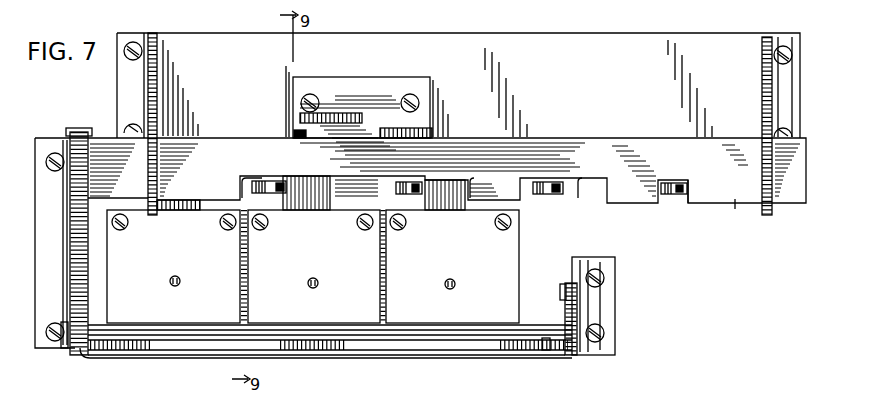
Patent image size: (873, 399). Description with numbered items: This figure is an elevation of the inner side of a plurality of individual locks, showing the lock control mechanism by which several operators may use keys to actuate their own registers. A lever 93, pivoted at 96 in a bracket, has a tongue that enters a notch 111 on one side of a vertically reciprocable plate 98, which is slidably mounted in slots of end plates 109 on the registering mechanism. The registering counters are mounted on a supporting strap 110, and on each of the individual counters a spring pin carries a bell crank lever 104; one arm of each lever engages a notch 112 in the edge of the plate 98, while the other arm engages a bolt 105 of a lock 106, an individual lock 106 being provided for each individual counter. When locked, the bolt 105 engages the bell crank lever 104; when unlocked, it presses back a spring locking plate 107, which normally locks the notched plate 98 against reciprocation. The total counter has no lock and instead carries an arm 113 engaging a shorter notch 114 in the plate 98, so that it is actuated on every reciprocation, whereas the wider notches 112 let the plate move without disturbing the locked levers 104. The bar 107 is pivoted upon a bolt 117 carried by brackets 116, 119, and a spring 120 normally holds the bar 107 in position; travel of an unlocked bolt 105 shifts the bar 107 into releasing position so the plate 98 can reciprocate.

The lever 93 is at (292, 138).
The pivot 96 is at (361, 129).
The vertically reciprocable plate 98 is at (420, 184).
The bell crank lever 104 is at (270, 194).
The bolt 105 is at (180, 210).
The lock 106 is at (513, 269).
The spring locking plate 107 is at (88, 130).
The end plates 109 is at (151, 215).
The supporting strap 110 is at (645, 43).
The notch 111 is at (333, 153).
The notch 112 is at (247, 177).
The arm 113 is at (672, 196).
The notch 114 is at (684, 205).
The bracket 116 is at (70, 241).
The bolt 117 is at (66, 349).
The bracket 119 is at (608, 307).
The spring 120 is at (68, 129).